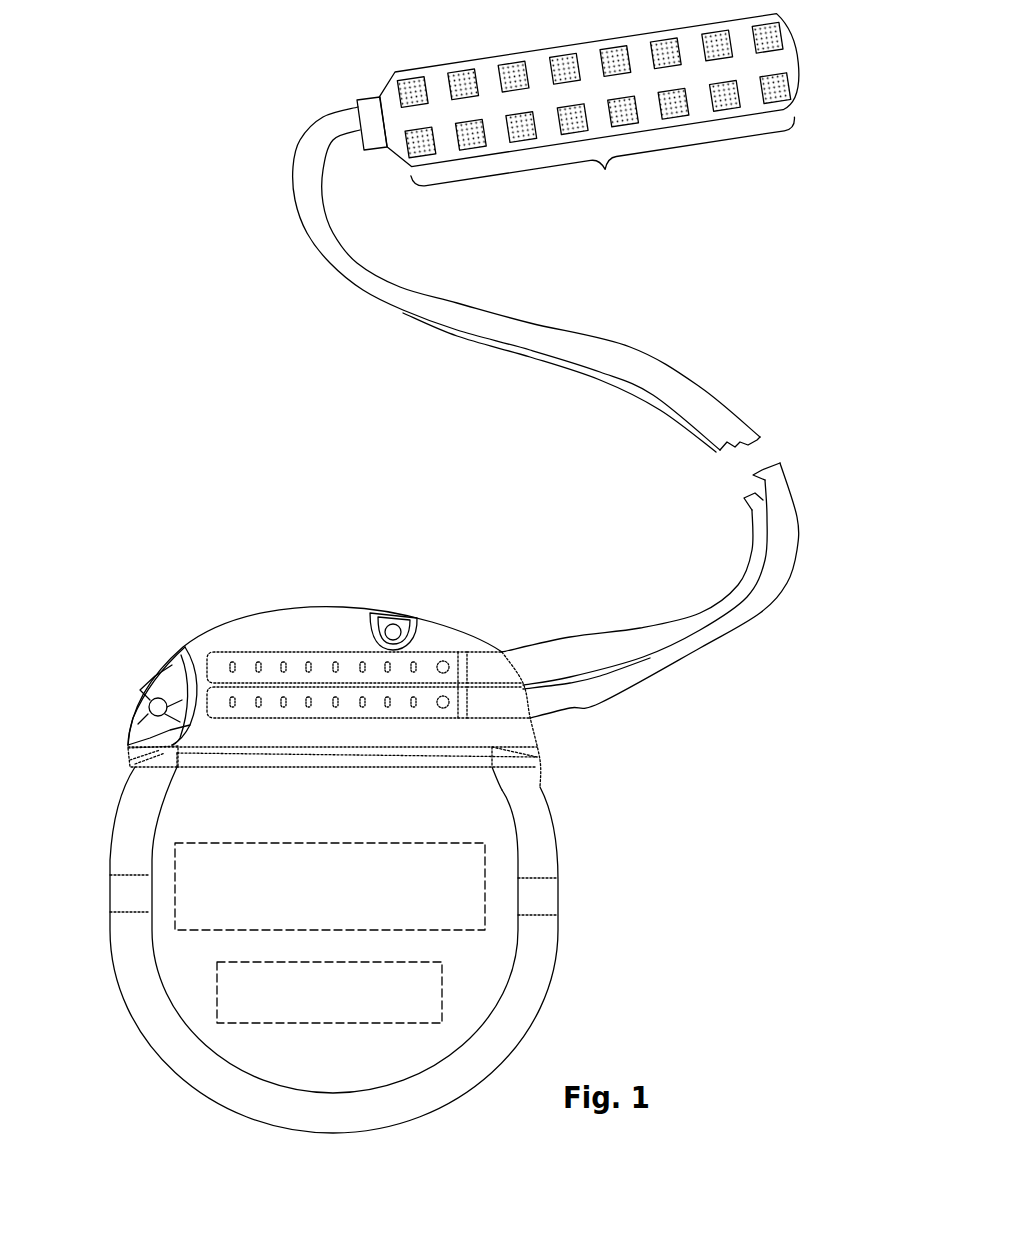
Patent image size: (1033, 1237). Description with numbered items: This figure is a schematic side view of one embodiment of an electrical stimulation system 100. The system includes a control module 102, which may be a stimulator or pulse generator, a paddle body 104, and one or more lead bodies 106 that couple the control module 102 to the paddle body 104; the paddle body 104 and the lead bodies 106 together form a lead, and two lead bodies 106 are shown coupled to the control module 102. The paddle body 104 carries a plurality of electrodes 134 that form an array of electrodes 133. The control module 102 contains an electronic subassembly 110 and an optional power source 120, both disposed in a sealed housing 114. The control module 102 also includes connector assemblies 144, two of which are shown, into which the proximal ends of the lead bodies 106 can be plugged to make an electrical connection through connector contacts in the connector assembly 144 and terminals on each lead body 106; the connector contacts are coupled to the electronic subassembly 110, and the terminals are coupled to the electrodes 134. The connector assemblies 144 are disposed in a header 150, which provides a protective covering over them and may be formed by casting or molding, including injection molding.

The electrical stimulation system 100 is at (744, 272).
The control module 102 is at (157, 634).
The paddle body 104 is at (612, 119).
The lead body 106 is at (630, 347).
The electronic subassembly 110 is at (193, 890).
The sealed housing 114 is at (177, 818).
The power source 120 is at (235, 997).
The array of electrodes 133 is at (599, 128).
The electrode 134 is at (462, 80).
The connector assembly 144 is at (422, 650).
The header 150 is at (313, 615).